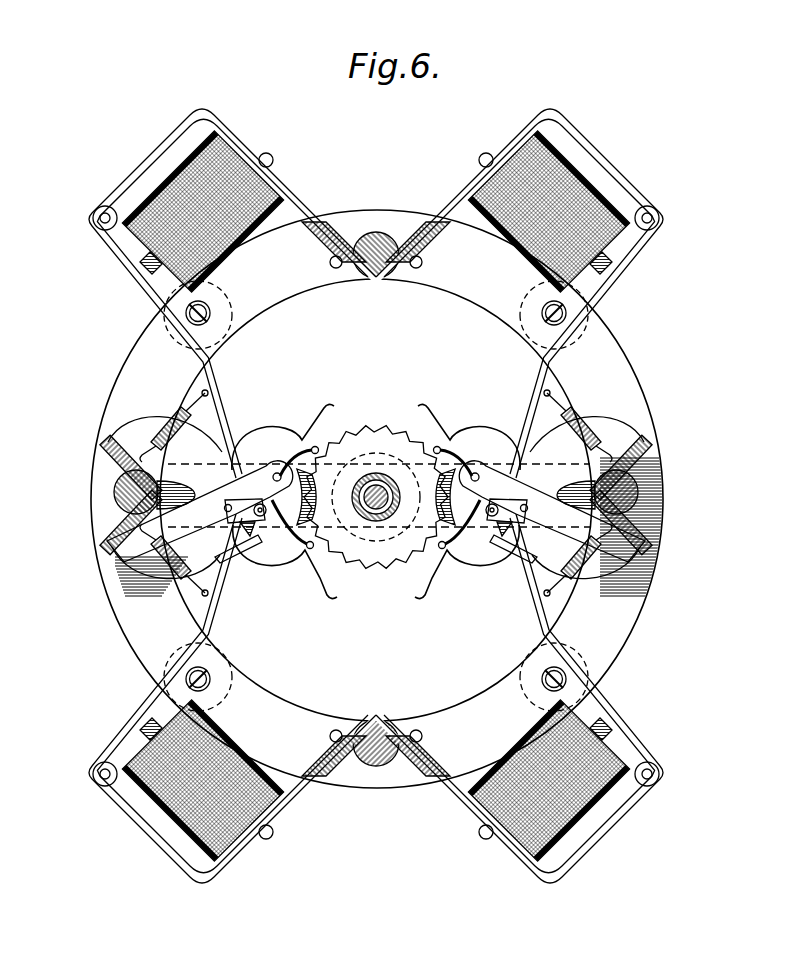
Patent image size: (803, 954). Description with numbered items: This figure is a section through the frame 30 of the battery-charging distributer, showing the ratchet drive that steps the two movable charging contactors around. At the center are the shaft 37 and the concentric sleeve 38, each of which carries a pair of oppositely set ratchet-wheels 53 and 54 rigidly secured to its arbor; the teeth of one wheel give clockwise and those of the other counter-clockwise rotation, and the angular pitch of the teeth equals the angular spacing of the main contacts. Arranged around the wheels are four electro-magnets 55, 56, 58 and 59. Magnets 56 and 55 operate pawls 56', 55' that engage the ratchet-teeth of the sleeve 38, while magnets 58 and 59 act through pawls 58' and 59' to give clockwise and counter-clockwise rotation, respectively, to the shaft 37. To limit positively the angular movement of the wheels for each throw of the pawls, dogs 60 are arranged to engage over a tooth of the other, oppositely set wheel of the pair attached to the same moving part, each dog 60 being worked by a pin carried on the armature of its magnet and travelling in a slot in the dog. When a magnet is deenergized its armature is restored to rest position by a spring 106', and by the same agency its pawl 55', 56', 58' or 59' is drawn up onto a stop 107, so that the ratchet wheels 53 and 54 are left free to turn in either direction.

The frame 30 is at (378, 235).
The shaft 37 is at (353, 492).
The concentric sleeve 38 is at (398, 494).
The ratchet-wheel 53 is at (357, 428).
The ratchet-wheel 54 is at (380, 452).
The electro-magnet 55 is at (519, 698).
The electro-magnet 56 is at (232, 698).
The electro-magnet 58 is at (232, 293).
The electro-magnet 59 is at (524, 293).
The pawl 55' is at (468, 559).
The pawl 56' is at (286, 559).
The pawl 58' is at (237, 477).
The pawl 59' is at (525, 477).
The dog 60 is at (317, 405).
The spring 106' is at (381, 508).
The stop 107 is at (277, 560).